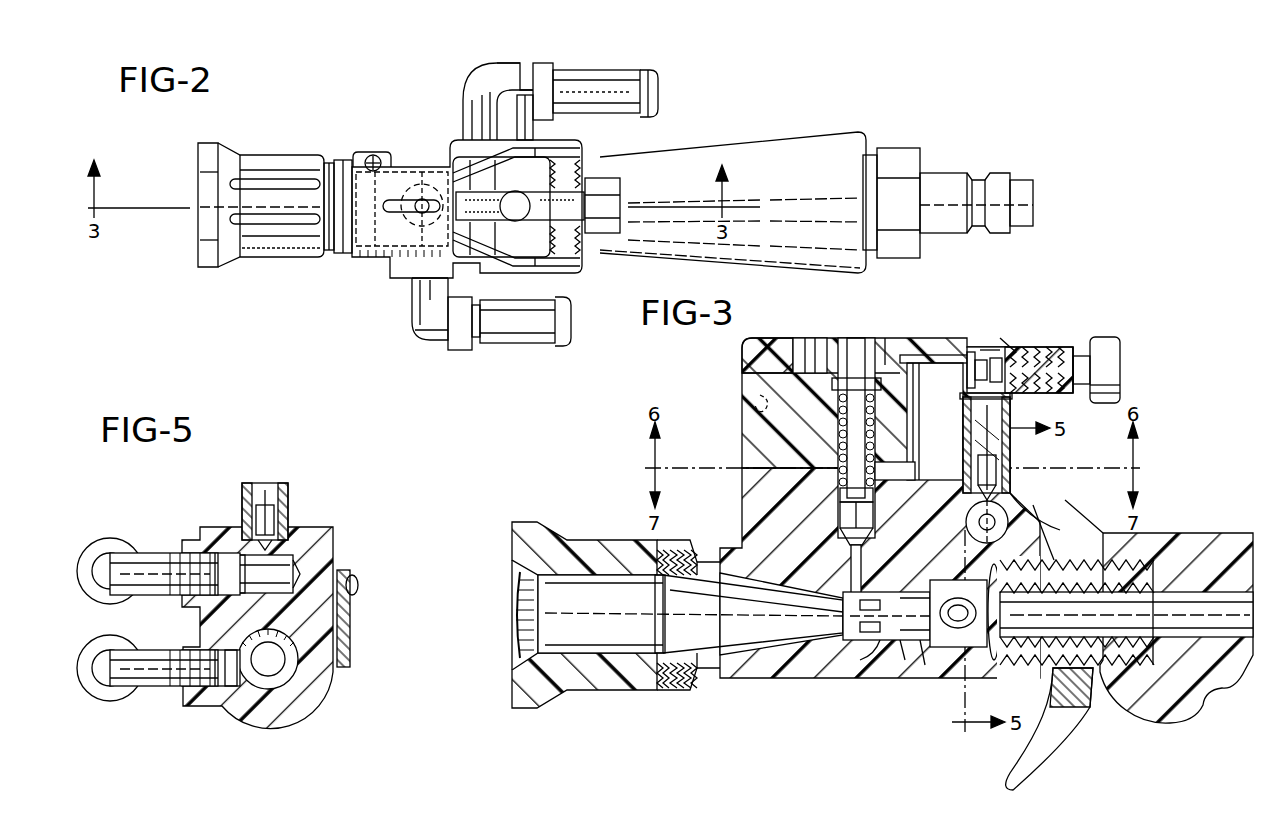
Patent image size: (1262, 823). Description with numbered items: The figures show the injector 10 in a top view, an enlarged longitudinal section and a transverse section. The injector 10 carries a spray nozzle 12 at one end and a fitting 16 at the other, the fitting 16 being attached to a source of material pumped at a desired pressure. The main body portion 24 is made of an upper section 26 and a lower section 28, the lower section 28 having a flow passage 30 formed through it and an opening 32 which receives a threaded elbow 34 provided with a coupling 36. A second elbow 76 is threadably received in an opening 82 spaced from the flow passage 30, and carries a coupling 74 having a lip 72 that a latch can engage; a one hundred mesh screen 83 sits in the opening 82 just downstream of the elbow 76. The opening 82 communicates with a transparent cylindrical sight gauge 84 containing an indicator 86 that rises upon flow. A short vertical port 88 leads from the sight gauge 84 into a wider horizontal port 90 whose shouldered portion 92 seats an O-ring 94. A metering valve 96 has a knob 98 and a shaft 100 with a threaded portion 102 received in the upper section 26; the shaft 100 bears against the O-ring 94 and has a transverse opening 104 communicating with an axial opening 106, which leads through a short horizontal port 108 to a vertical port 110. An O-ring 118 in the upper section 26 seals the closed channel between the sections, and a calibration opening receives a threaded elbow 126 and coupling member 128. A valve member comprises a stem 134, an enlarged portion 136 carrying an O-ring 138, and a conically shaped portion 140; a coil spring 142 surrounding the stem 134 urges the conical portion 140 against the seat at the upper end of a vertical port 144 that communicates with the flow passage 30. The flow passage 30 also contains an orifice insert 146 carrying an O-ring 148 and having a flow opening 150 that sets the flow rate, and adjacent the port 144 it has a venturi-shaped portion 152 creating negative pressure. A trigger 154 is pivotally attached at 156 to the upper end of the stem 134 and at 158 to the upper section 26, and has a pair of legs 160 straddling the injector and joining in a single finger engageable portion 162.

In FIG. 3, the injector 10 is at (1036, 311).
In FIG. 3, the spray nozzle 12 is at (582, 685).
In FIG. 2, the fitting 16 is at (978, 185).
In FIG. 3, the main body portion 24 is at (740, 466).
In FIG. 3, the upper section 26 is at (745, 416).
In FIG. 3, the lower section 28 is at (745, 516).
In FIG. 5, the lower section 28 is at (263, 717).
In FIG. 3, the flow passage 30 is at (940, 586).
In FIG. 5, the flow passage 30 is at (292, 664).
In FIG. 3, the opening 32 is at (960, 645).
In FIG. 5, the opening 32 is at (215, 700).
In FIG. 2, the threaded elbow 34 is at (463, 100).
In FIG. 5, the threaded elbow 34 is at (130, 690).
In FIG. 2, the coupling 36 is at (497, 63).
In FIG. 5, the coupling 36 is at (105, 652).
In FIG. 2, the lip 72 is at (657, 92).
In FIG. 2, the coupling 74 is at (592, 75).
In FIG. 5, the coupling 74 is at (108, 545).
In FIG. 2, the elbow 76 is at (533, 122).
In FIG. 5, the elbow 76 is at (145, 556).
In FIG. 3, the opening 82 is at (972, 522).
In FIG. 5, the opening 82 is at (293, 566).
In FIG. 5, the screen 83 is at (242, 586).
In FIG. 3, the sight gauge 84 is at (1012, 446).
In FIG. 5, the sight gauge 84 is at (288, 488).
In FIG. 3, the indicator 86 is at (1045, 475).
In FIG. 5, the indicator 86 is at (262, 518).
In FIG. 3, the vertical port 88 is at (1005, 397).
In FIG. 3, the horizontal port 90 is at (1008, 345).
In FIG. 3, the shouldered portion 92 is at (921, 393).
In FIG. 3, the O-ring 94 is at (982, 350).
In FIG. 3, the metering valve 96 is at (1107, 326).
In FIG. 3, the knob 98 is at (1120, 368).
In FIG. 3, the shaft 100 is at (1047, 348).
In FIG. 3, the threaded portion 102 is at (1072, 392).
In FIG. 3, the transverse opening 104 is at (998, 358).
In FIG. 3, the axial opening 106 is at (978, 360).
In FIG. 3, the horizontal port 108 is at (968, 352).
In FIG. 3, the vertical port 110 is at (900, 355).
In FIG. 3, the O-ring 118 is at (883, 474).
In FIG. 2, the threaded elbow 126 is at (412, 312).
In FIG. 2, the coupling member 128 is at (520, 333).
In FIG. 3, the stem 134 is at (838, 418).
In FIG. 3, the enlarged portion 136 is at (840, 514).
In FIG. 3, the O-ring 138 is at (874, 510).
In FIG. 3, the conically shaped portion 140 is at (848, 535).
In FIG. 3, the coil spring 142 is at (838, 470).
In FIG. 3, the vertical port 144 is at (859, 581).
In FIG. 3, the orifice insert 146 is at (856, 668).
In FIG. 3, the O-ring 148 is at (916, 672).
In FIG. 3, the flow opening 150 is at (890, 678).
In FIG. 3, the venturi-shaped portion 152 is at (838, 620).
In FIG. 3, the trigger 154 is at (784, 338).
In FIG. 2, the pivotal attachment 156 is at (410, 167).
In FIG. 3, the pivotal attachment 156 is at (850, 340).
In FIG. 2, the pivotal attachment 158 is at (366, 160).
In FIG. 3, the pivotal attachment 158 is at (745, 395).
In FIG. 2, the legs 160 is at (582, 150).
In FIG. 3, the finger engageable portion 162 is at (1040, 766).